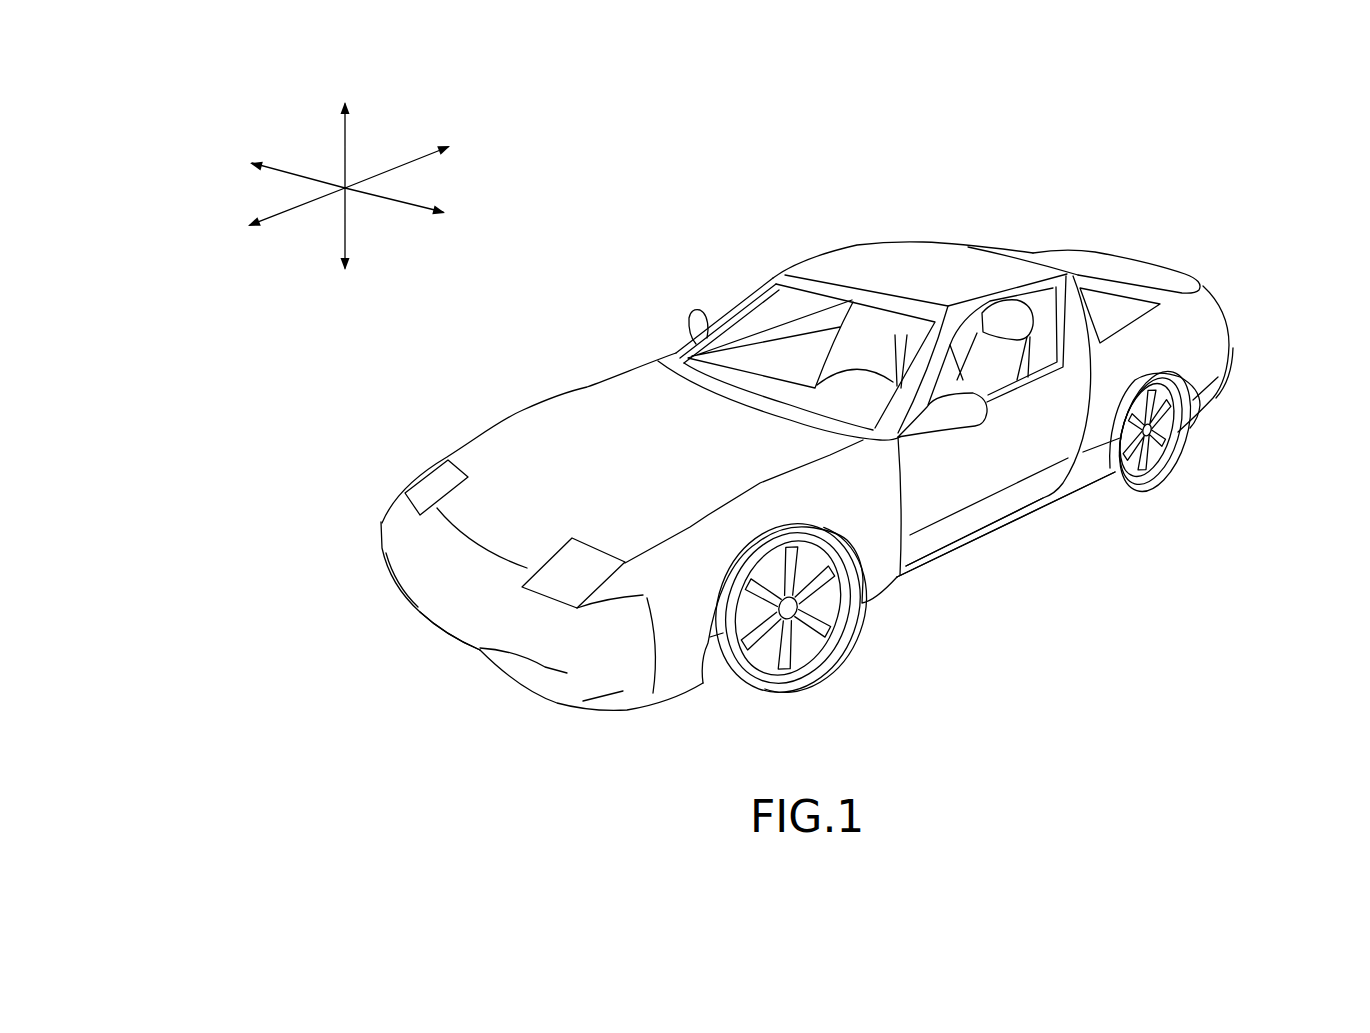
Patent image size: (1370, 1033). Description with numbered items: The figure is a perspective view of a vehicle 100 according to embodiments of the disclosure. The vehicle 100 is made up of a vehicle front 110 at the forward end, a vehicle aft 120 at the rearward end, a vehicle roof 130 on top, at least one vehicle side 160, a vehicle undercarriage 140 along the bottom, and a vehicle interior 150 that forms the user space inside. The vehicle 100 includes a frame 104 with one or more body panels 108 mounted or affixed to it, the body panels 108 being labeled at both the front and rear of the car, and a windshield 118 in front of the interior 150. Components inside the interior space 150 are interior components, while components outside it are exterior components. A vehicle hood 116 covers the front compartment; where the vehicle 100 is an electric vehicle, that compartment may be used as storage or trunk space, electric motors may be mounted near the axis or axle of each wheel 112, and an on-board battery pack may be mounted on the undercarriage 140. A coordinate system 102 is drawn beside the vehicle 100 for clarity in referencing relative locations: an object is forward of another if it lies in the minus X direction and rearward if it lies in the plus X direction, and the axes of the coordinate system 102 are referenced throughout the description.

The vehicle 100 is at (749, 165).
The coordinate system 102 is at (345, 188).
The frame 104 is at (1000, 527).
The body panels 108 is at (427, 570).
The vehicle front 110 is at (394, 675).
The wheel 112 is at (810, 672).
The vehicle hood 116 is at (545, 427).
The windshield 118 is at (780, 298).
The vehicle aft 120 is at (1216, 267).
The vehicle roof 130 is at (924, 257).
The vehicle undercarriage 140 is at (933, 586).
The vehicle interior 150 is at (768, 337).
The vehicle side 160 is at (1027, 470).